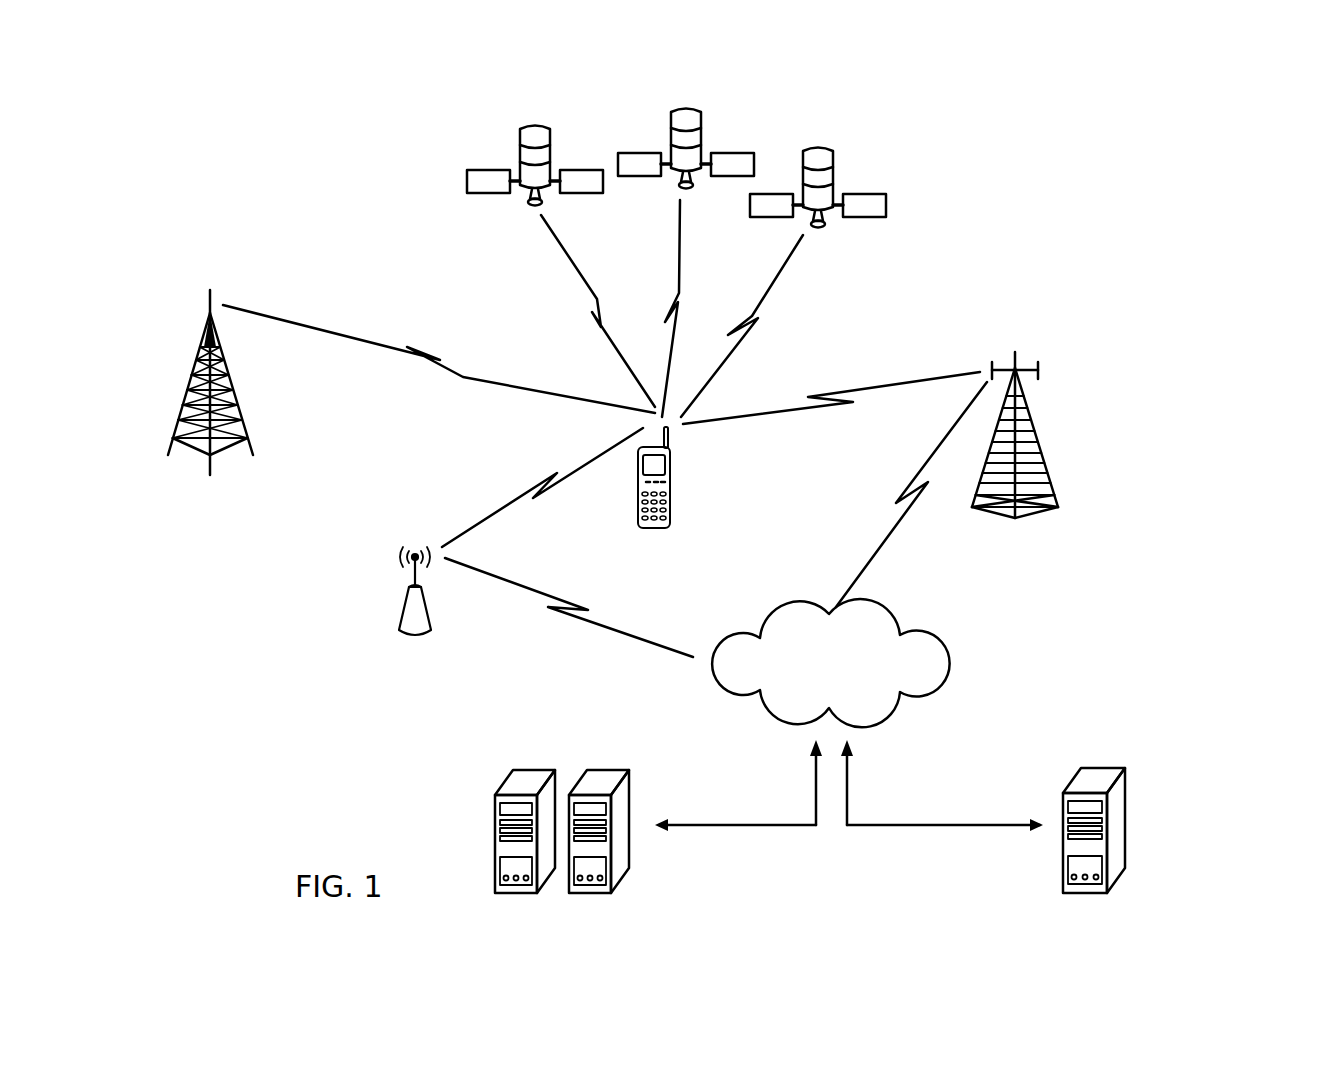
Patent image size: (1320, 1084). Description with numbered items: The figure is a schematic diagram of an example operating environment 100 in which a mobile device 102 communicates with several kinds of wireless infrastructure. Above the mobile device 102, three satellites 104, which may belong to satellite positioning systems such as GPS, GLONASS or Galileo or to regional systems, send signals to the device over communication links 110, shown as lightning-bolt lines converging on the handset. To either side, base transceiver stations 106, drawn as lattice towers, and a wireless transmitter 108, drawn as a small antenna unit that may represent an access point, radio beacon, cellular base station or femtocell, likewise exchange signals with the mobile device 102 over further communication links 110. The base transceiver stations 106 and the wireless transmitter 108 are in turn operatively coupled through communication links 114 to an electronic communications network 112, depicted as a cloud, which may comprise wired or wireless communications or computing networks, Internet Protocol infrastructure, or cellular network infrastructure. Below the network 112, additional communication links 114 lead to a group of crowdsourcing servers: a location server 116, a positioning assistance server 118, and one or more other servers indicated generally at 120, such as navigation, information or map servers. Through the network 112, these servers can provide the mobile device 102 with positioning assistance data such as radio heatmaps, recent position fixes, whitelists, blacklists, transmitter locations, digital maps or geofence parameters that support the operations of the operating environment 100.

The operating environment 100 is at (1136, 136).
The mobile device 102 is at (672, 480).
The satellites 104 is at (532, 122).
The base transceiver stations 106 is at (197, 377).
The wireless transmitters 108 is at (405, 598).
The communication links 110 is at (567, 268).
The electronic communications network 112 is at (955, 650).
The communication links 114 is at (563, 598).
The location server 116 is at (530, 767).
The positioning assistance server 118 is at (600, 765).
The other servers 120 is at (1152, 832).